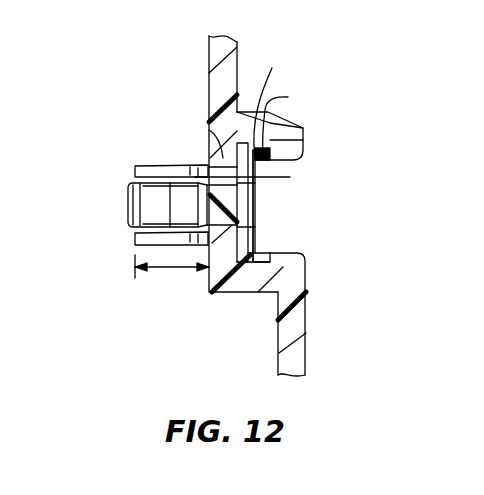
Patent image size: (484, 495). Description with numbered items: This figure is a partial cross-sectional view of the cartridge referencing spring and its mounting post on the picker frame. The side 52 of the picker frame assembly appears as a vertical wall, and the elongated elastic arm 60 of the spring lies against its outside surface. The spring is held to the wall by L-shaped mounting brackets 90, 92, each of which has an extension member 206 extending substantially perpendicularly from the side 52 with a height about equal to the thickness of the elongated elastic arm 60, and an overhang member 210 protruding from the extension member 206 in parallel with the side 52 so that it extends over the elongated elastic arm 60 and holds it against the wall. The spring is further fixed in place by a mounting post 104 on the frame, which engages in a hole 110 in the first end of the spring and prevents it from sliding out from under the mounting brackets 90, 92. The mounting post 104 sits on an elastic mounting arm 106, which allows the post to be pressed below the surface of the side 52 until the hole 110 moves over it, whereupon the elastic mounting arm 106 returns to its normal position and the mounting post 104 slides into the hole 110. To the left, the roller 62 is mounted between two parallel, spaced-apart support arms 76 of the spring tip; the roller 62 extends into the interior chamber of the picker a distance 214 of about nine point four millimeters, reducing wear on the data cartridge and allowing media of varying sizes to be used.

The side of the picker frame assembly 52 is at (209, 58).
The extension member 206 is at (275, 98).
The overhang member 210 is at (297, 120).
The mounting bracket 90 is at (300, 123).
The elastic mounting arm 106 is at (209, 130).
The hole 110 is at (255, 178).
The mounting post 104 is at (250, 195).
The roller 62 is at (128, 202).
The support arms 76 is at (135, 168).
The elongated elastic arm 60 is at (250, 230).
The mounting bracket 92 is at (293, 263).
The distance 214 is at (172, 270).